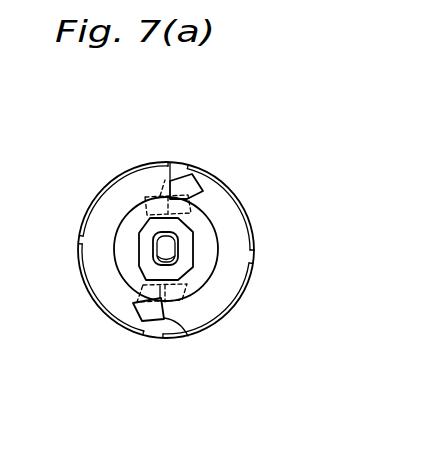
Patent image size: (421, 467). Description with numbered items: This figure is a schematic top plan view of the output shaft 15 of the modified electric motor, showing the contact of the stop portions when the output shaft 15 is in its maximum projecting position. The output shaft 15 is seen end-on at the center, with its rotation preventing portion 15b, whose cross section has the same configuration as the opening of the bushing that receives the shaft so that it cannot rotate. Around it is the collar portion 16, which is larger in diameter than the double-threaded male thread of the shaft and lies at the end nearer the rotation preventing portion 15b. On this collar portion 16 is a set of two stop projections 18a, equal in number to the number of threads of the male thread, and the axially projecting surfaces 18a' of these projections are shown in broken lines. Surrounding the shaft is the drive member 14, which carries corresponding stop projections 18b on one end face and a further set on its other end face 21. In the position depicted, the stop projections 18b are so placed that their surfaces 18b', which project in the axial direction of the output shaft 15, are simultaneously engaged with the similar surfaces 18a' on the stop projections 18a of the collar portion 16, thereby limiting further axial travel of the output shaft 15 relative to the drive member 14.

The drive member 14 is at (83, 293).
The output shaft 15 is at (160, 250).
The rotation preventing portion 15b is at (139, 240).
The collar portion 16 is at (217, 238).
The stop projections 18a is at (200, 217).
The surfaces of stop projections 18a' is at (210, 228).
The stop projections 18b is at (185, 269).
The surfaces of stop projections 18b' is at (186, 239).
The other end face 21 is at (227, 211).